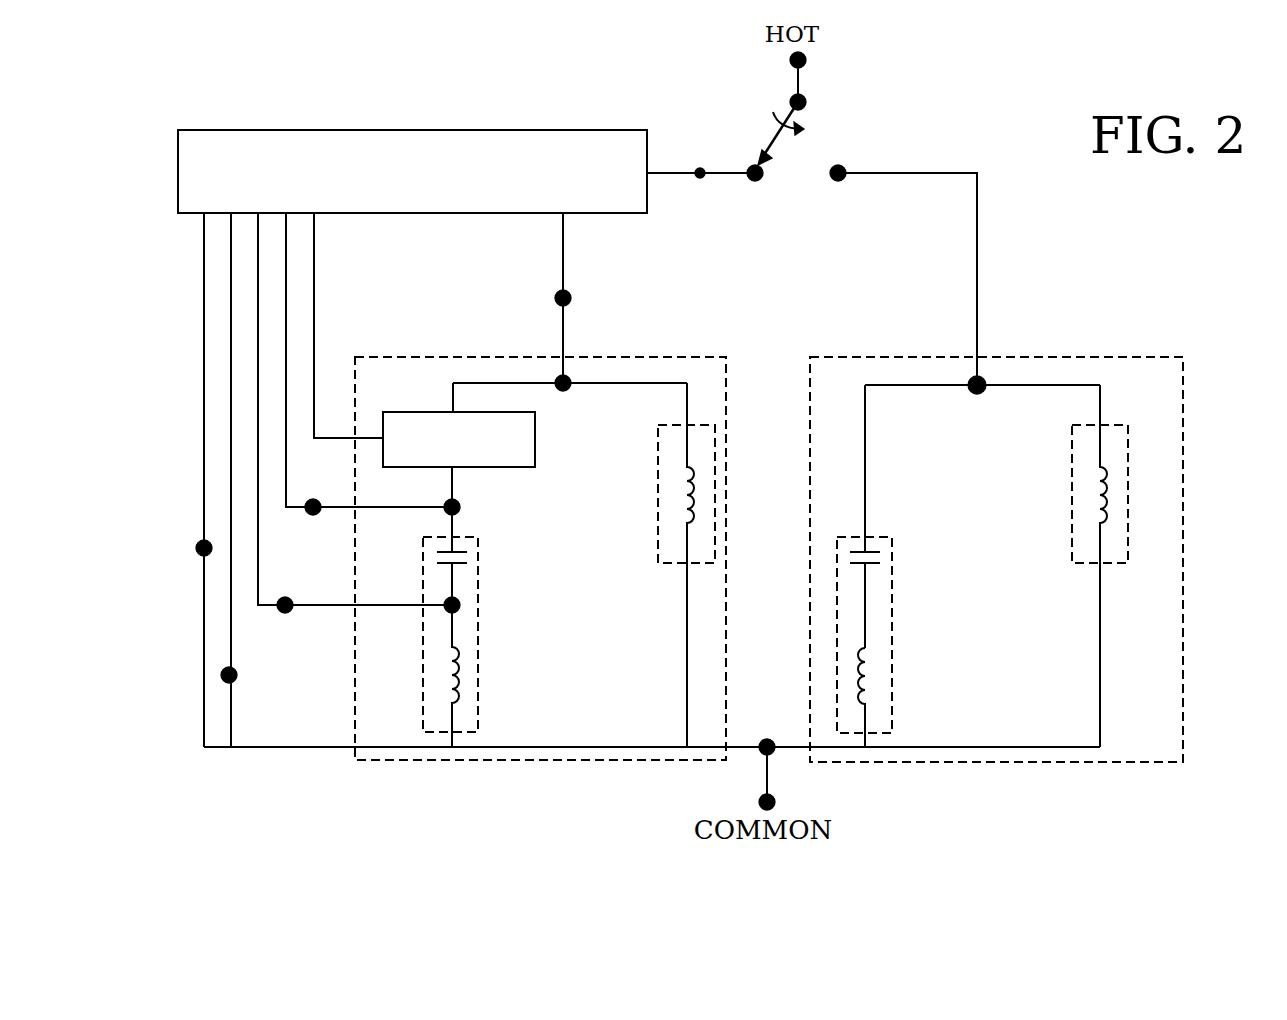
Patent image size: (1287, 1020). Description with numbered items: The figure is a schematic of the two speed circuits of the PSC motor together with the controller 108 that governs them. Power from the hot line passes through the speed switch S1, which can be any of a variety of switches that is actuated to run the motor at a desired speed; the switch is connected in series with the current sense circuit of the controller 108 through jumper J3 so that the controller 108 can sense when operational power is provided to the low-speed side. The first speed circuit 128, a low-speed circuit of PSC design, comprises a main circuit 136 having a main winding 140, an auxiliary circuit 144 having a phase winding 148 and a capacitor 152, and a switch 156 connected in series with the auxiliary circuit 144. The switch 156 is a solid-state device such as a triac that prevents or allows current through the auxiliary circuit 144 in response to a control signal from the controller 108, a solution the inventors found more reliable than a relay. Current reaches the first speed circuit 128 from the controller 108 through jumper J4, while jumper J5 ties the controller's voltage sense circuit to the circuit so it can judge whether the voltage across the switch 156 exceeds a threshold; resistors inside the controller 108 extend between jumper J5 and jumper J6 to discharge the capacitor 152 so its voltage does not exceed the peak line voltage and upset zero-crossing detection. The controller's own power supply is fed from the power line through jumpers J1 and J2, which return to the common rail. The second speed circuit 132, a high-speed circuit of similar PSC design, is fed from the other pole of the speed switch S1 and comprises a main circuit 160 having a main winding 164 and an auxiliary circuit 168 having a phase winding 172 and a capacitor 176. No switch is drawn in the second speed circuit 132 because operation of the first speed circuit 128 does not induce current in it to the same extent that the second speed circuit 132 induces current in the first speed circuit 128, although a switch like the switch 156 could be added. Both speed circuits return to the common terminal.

The controller 108 is at (372, 131).
The first speed circuit 128 is at (648, 352).
The second speed circuit 132 is at (1147, 352).
The main circuit 136 is at (663, 567).
The main winding 140 is at (685, 491).
The auxiliary circuit 144 is at (480, 627).
The phase winding 148 is at (462, 690).
The capacitor 152 is at (472, 557).
The switch 156 is at (538, 436).
The main circuit 160 is at (1093, 491).
The main winding 164 is at (1080, 565).
The auxiliary circuit 168 is at (893, 627).
The phase winding 172 is at (873, 686).
The capacitor 176 is at (880, 556).
The jumper J1 is at (179, 554).
The jumper J2 is at (246, 677).
The jumper J3 is at (696, 194).
The jumper J4 is at (580, 295).
The jumper J5 is at (315, 487).
The jumper J6 is at (288, 588).
The speed switch S1 is at (748, 118).